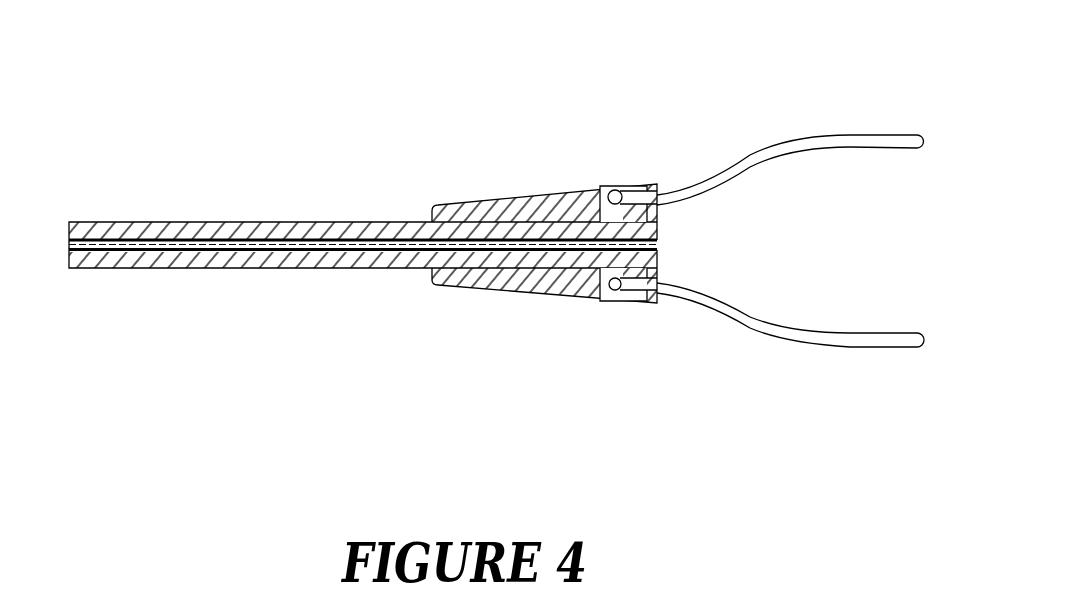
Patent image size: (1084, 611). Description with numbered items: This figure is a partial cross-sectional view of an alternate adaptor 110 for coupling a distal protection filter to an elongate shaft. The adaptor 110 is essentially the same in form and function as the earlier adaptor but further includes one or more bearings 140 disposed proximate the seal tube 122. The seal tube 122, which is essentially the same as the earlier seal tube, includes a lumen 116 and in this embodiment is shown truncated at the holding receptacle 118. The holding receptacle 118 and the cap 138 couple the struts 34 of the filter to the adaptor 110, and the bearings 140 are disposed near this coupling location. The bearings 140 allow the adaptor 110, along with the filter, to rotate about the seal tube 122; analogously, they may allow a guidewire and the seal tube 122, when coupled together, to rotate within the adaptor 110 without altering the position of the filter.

The adaptor 110 is at (403, 150).
The lumen 116 is at (451, 242).
The seal tube 122 is at (487, 233).
The cap 138 is at (555, 192).
The holding receptacle 118 is at (640, 200).
The bearings 140 is at (627, 190).
The struts 34 is at (800, 148).